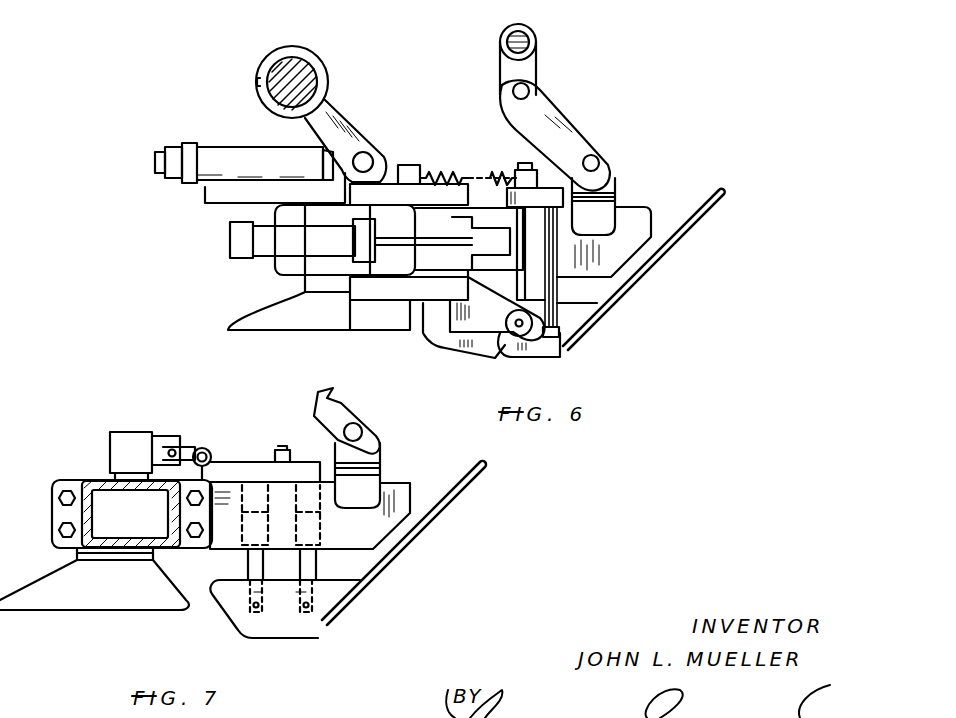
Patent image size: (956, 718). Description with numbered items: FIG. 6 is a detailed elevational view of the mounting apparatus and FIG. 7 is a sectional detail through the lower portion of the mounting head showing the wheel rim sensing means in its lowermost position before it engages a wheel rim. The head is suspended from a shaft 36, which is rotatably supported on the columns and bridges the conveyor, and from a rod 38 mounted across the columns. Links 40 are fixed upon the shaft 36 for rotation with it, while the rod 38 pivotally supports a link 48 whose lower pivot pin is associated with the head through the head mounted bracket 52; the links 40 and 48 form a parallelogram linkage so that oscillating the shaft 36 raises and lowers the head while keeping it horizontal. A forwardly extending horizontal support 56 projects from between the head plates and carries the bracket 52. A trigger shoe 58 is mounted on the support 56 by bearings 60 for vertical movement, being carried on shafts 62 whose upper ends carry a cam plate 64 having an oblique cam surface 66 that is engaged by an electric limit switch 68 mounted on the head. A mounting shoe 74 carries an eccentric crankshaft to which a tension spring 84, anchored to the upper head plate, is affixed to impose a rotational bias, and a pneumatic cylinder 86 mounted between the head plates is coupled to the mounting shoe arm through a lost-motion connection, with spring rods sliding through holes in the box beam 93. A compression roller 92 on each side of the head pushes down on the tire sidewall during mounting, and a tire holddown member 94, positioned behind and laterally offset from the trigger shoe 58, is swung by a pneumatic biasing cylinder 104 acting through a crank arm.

In FIG. 6, the shaft 36 is at (298, 64).
In FIG. 6, the rod 38 is at (530, 42).
In FIG. 6, the link 40 is at (336, 120).
In FIG. 6, the link 48 is at (562, 118).
In FIG. 7, the link 48 is at (345, 410).
In FIG. 7, the head mounted bracket 52 is at (353, 497).
In FIG. 6, the support 56 is at (640, 212).
In FIG. 6, the trigger shoe 58 is at (522, 358).
In FIG. 7, the trigger shoe 58 is at (248, 628).
In FIG. 7, the bearing 60 is at (242, 526).
In FIG. 7, the shaft 62 is at (302, 564).
In FIG. 7, the cam plate 64 is at (305, 462).
In FIG. 7, the oblique cam surface 66 is at (204, 442).
In FIG. 7, the electric limit switch 68 is at (133, 434).
In FIG. 6, the mounting shoe 74 is at (550, 350).
In FIG. 6, the tension spring 84 is at (430, 178).
In FIG. 6, the pneumatic cylinder 86 is at (351, 240).
In FIG. 6, the compression roller 92 is at (568, 338).
In FIG. 7, the box beam 93 is at (93, 480).
In FIG. 6, the tire holddown member 94 is at (450, 340).
In FIG. 6, the pneumatic biasing cylinder 104 is at (311, 174).